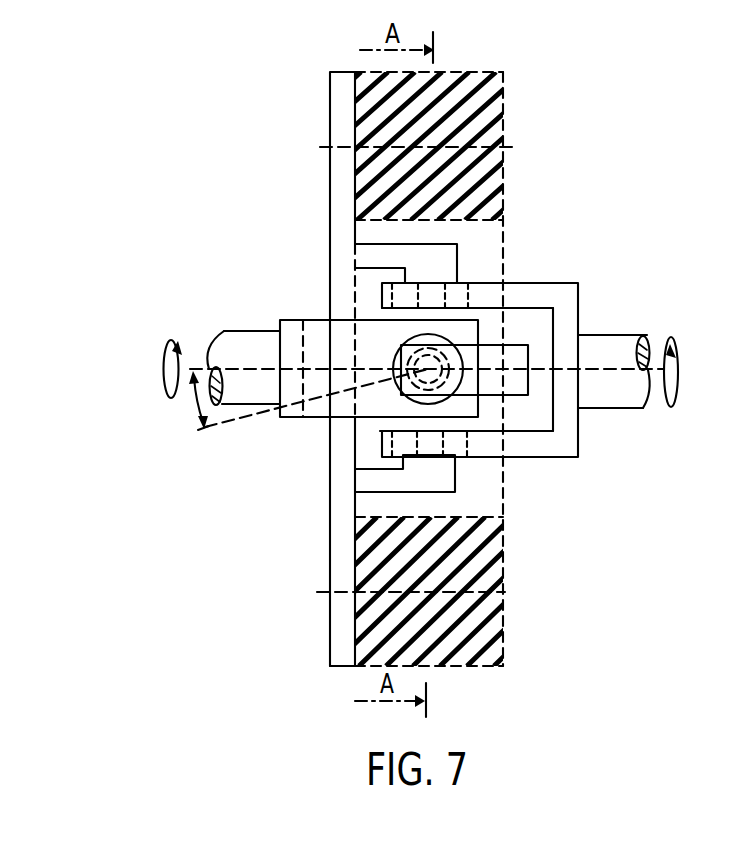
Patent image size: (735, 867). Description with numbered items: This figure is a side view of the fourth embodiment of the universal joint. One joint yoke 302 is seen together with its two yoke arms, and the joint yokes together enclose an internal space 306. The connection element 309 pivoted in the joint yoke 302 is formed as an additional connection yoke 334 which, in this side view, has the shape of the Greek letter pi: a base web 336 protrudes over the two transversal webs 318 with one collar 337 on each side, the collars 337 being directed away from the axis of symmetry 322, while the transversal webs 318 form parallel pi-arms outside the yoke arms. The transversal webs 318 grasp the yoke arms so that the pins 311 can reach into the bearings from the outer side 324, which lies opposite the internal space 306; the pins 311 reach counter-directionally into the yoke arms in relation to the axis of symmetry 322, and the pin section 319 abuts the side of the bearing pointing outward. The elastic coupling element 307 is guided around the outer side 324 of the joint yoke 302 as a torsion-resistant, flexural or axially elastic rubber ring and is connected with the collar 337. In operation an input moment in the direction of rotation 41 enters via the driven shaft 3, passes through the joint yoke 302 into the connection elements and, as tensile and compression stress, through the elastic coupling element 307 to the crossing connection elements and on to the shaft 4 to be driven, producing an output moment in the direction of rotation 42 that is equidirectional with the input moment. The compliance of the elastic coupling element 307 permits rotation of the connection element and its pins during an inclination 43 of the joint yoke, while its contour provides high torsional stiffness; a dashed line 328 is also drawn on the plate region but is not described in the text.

The driven shaft 3 is at (610, 352).
The shaft to be driven 4 is at (248, 342).
The direction of rotation 41 is at (673, 335).
The direction of rotation 42 is at (175, 343).
The inclination 43 is at (193, 405).
The joint yoke 302 is at (512, 360).
The internal space 306 is at (490, 457).
The elastic coupling element 307 is at (495, 633).
The connection element 309 is at (283, 369).
The pin 311 is at (430, 445).
The transversal web 318 is at (382, 375).
The pin section 319 is at (427, 462).
The axis of symmetry 322 is at (540, 367).
The outer side 324 is at (517, 283).
The axis line 328 is at (320, 587).
The connection yoke 334 is at (283, 369).
The base web 336 is at (337, 505).
The collar 337 is at (337, 623).